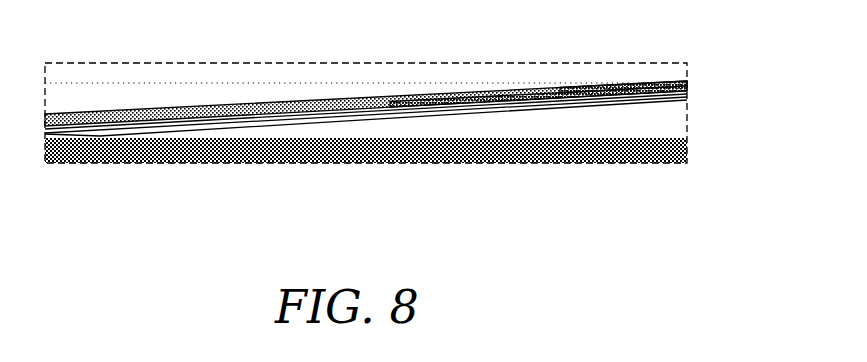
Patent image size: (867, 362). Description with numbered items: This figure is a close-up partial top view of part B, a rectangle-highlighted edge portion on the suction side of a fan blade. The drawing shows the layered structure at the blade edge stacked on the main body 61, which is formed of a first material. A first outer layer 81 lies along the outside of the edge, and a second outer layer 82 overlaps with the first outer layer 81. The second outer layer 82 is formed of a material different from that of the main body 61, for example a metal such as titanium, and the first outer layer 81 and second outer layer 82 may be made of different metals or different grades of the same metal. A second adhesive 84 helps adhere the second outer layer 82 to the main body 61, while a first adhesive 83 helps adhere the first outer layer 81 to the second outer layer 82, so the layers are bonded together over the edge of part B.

The part B is at (146, 29).
The first outer layer 81 is at (247, 98).
The second outer layer 82 is at (594, 78).
The first adhesive 83 is at (471, 100).
The second adhesive 84 is at (684, 94).
The main body 61 is at (485, 148).